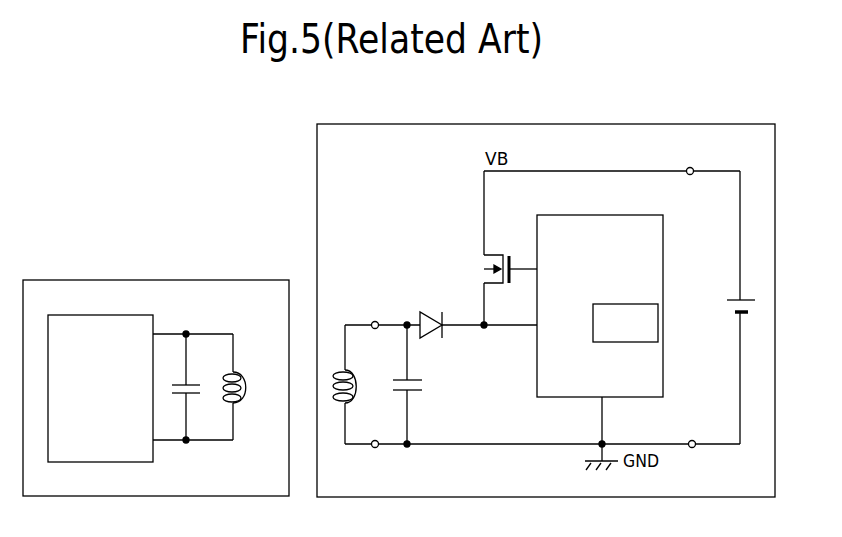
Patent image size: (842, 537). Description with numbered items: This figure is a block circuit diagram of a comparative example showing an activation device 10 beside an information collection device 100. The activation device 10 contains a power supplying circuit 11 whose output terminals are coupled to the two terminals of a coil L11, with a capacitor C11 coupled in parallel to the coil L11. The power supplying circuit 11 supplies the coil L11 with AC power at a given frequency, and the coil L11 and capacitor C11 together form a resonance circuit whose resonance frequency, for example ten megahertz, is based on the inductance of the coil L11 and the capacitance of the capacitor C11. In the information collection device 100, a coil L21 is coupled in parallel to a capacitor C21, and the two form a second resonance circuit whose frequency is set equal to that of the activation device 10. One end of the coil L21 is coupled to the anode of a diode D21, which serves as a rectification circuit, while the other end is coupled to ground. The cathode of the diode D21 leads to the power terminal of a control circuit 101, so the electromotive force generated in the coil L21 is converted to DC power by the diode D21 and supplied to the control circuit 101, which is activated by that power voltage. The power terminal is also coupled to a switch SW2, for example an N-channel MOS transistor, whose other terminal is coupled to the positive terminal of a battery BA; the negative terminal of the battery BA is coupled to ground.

The activation device 10 is at (243, 280).
The power supplying circuit 11 is at (137, 314).
The capacitor C11 is at (190, 381).
The coil L11 is at (237, 373).
The information collection device 100 is at (345, 124).
The control circuit 101 is at (640, 215).
The switch SW2 is at (500, 253).
The diode D21 is at (438, 313).
The coil L21 is at (348, 377).
The capacitor C21 is at (413, 372).
The battery BA is at (736, 298).